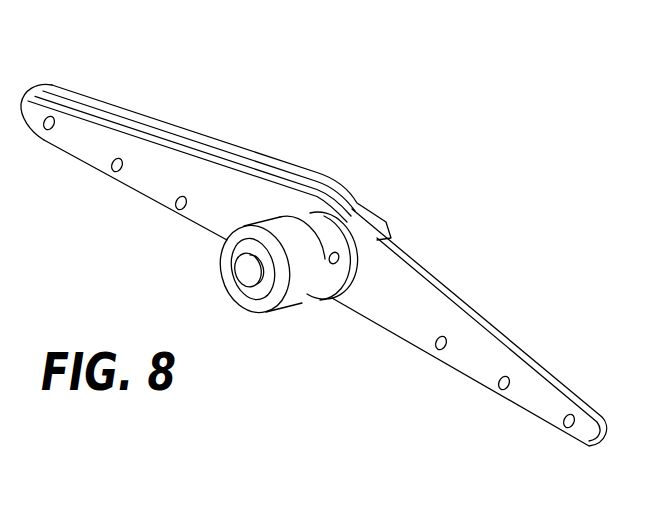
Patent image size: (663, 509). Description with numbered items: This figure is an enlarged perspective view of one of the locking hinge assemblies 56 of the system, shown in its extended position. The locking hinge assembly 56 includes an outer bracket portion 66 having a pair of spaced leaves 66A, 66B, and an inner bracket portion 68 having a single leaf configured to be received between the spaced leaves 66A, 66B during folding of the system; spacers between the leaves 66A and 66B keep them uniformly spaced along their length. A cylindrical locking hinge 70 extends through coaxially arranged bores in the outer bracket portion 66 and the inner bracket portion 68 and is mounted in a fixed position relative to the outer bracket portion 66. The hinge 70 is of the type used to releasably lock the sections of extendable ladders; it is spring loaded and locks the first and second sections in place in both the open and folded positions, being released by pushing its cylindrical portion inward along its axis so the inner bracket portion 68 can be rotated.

The locking hinge assembly 56 is at (397, 169).
The outer bracket portion 66 is at (117, 82).
The spaced leaf 66A is at (182, 146).
The spaced leaf 66B is at (263, 160).
The inner bracket portion 68 is at (420, 297).
The cylindrical locking hinge 70 is at (210, 253).